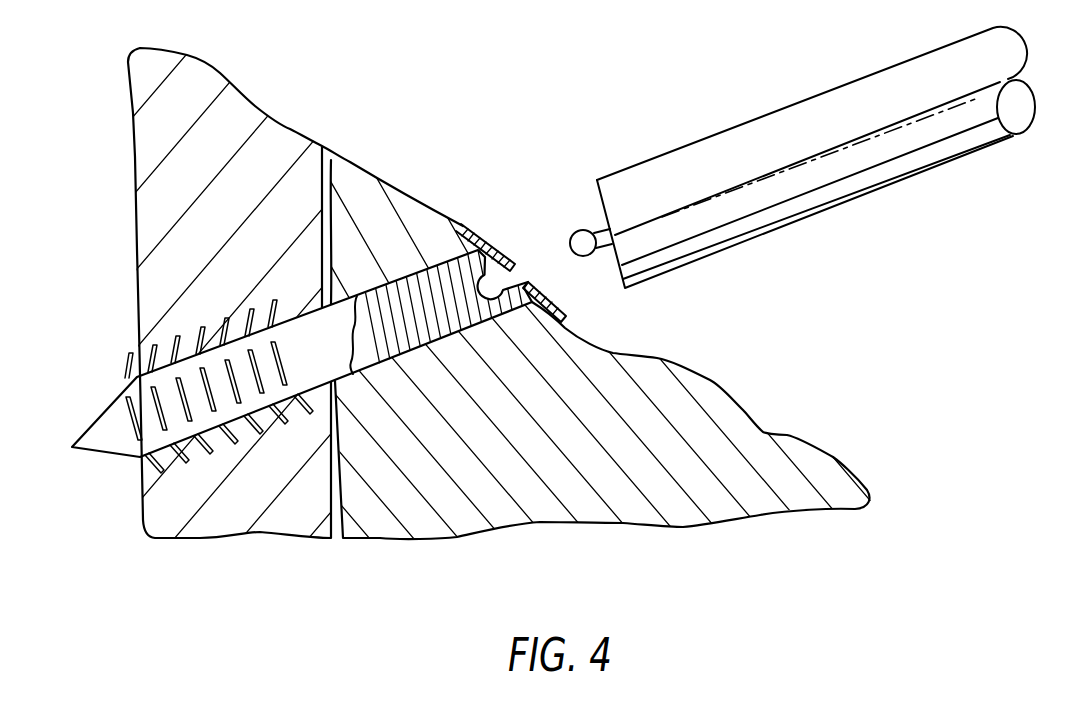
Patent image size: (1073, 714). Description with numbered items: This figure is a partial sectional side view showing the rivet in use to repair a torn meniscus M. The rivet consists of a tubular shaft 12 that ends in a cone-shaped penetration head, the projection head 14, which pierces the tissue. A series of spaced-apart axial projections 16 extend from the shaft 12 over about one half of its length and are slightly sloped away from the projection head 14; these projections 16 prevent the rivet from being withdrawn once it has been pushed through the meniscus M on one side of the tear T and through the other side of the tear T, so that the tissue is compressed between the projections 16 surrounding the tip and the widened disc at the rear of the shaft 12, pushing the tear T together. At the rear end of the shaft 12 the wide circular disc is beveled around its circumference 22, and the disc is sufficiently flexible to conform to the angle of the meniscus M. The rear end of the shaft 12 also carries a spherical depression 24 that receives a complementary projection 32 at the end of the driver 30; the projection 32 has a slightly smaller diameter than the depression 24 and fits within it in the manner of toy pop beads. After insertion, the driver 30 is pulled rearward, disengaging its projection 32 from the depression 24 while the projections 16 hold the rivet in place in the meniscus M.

The tubular shaft 12 is at (345, 297).
The projection head 14 is at (97, 447).
The axial projections 16 is at (200, 335).
The circumference 22 is at (463, 224).
The depression 24 is at (518, 273).
The driver 30 is at (780, 217).
The projection 32 is at (576, 231).
The meniscus M is at (163, 217).
The tear T is at (322, 307).